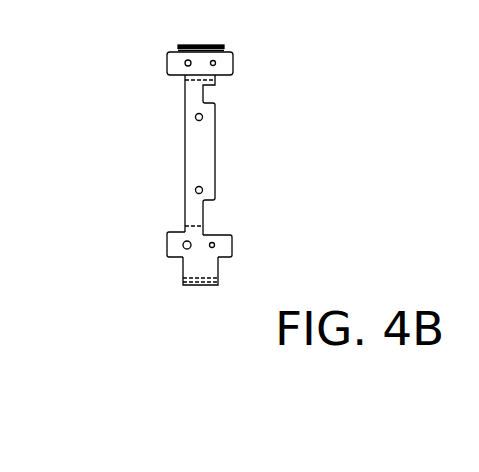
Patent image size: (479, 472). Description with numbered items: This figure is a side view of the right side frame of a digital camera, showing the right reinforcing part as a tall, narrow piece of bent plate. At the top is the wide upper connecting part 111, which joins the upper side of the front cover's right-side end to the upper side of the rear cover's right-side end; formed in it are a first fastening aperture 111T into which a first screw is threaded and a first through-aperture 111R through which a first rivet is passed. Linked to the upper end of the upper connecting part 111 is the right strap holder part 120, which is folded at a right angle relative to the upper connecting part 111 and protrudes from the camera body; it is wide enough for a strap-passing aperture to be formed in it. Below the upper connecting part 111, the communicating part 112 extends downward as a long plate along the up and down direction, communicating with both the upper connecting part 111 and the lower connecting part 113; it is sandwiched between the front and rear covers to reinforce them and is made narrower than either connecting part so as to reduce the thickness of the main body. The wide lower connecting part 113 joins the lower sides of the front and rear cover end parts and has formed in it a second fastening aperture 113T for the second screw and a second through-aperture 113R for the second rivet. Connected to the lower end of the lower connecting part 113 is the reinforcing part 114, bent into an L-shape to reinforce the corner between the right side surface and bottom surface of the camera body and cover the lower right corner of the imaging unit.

The right strap holder part 120 is at (198, 44).
The upper connecting part 111 is at (167, 63).
The first through-aperture 111R is at (179, 69).
The first fastening aperture 111T is at (217, 63).
The communicating part 112 is at (190, 153).
The lower connecting part 113 is at (166, 233).
The second through-aperture 113R is at (178, 245).
The second fastening aperture 113T is at (218, 244).
The reinforcing part 114 is at (200, 287).